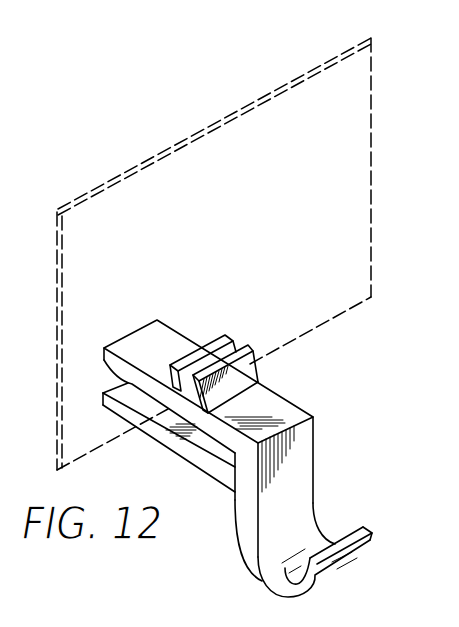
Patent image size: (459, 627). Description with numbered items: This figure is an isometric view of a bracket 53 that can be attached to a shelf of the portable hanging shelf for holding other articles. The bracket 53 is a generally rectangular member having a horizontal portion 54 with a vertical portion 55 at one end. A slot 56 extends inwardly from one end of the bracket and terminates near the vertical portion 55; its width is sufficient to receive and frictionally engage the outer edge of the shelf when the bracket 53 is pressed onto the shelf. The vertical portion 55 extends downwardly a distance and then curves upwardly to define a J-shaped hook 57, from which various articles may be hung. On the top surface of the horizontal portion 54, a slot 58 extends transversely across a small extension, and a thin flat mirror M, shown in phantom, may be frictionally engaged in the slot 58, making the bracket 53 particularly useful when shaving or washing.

The mirror M is at (142, 163).
The bracket 53 is at (342, 414).
The horizontal portion 54 is at (273, 413).
The vertical portion 55 is at (302, 470).
The slot 56 is at (193, 437).
The J-shaped hook 57 is at (257, 565).
The slot 58 is at (235, 345).